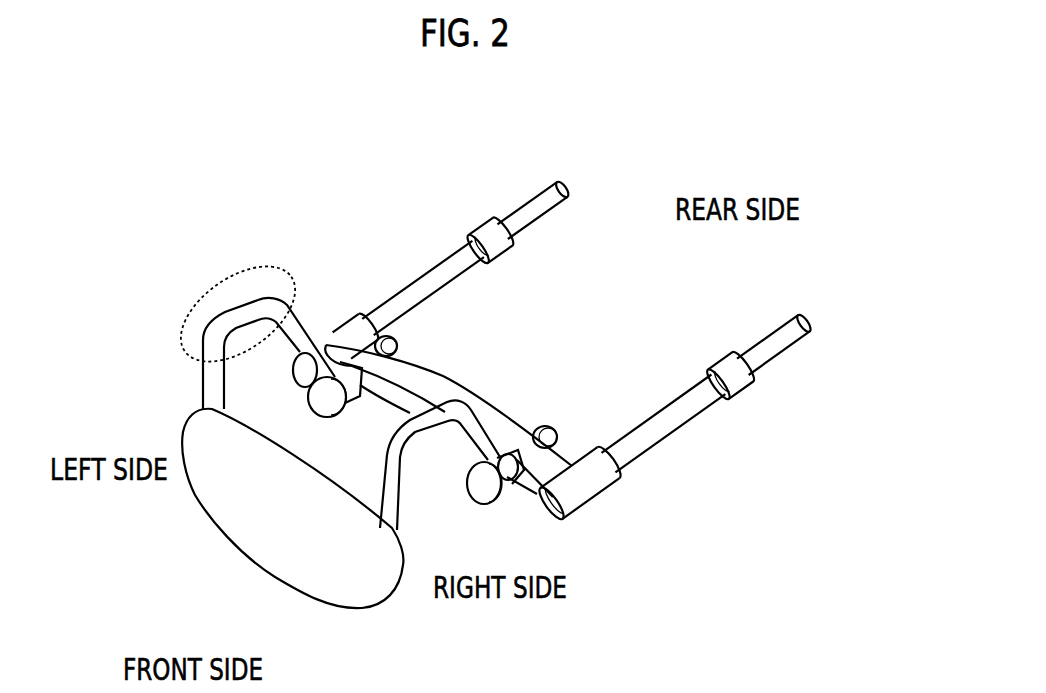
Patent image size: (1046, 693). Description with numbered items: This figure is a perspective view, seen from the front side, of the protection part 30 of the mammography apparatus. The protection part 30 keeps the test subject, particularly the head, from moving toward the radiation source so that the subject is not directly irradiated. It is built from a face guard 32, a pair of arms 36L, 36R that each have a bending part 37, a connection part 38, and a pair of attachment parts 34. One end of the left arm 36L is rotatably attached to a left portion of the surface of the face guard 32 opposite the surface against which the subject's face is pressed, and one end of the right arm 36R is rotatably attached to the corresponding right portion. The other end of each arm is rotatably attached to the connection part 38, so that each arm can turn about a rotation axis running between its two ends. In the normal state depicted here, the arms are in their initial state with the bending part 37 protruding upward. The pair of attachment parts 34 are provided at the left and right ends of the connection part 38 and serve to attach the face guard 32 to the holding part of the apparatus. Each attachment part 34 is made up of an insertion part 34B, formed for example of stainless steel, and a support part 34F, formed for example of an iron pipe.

The protection part 30 is at (684, 117).
The face guard 32 is at (316, 563).
The attachment part 34 is at (604, 347).
The insertion part 34B is at (770, 357).
The support part 34F is at (677, 414).
The arm 36L is at (292, 330).
The arm 36R is at (430, 426).
The bending part 37 is at (208, 297).
The connection part 38 is at (430, 378).